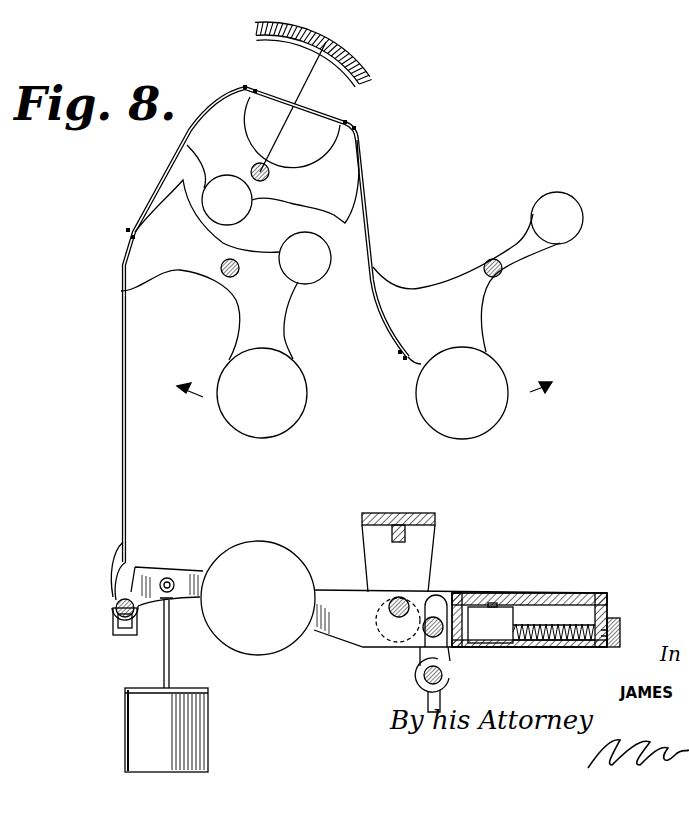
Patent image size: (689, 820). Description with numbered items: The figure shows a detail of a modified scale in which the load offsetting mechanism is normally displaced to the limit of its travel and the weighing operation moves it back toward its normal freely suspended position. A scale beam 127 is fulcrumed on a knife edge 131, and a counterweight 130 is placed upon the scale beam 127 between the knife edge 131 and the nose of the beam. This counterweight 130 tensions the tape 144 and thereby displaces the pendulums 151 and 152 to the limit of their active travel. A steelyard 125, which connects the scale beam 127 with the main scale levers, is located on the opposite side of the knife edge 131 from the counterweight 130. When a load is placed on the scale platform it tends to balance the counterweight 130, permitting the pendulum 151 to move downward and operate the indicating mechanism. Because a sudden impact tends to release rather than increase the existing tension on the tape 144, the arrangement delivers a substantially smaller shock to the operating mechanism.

The tape 144 is at (123, 450).
The pendulum 151 is at (272, 427).
The pendulum 152 is at (453, 415).
The counterweight 130 is at (265, 642).
The scale beam 127 is at (340, 627).
The fulcruming knife edge 131 is at (393, 612).
The steelyard 125 is at (440, 702).